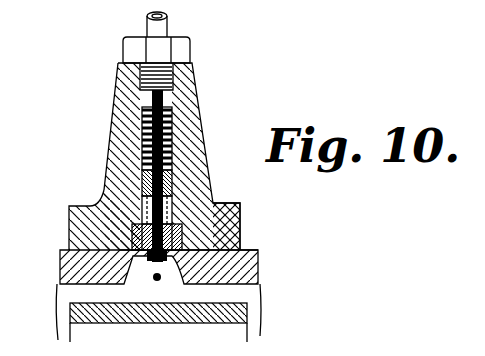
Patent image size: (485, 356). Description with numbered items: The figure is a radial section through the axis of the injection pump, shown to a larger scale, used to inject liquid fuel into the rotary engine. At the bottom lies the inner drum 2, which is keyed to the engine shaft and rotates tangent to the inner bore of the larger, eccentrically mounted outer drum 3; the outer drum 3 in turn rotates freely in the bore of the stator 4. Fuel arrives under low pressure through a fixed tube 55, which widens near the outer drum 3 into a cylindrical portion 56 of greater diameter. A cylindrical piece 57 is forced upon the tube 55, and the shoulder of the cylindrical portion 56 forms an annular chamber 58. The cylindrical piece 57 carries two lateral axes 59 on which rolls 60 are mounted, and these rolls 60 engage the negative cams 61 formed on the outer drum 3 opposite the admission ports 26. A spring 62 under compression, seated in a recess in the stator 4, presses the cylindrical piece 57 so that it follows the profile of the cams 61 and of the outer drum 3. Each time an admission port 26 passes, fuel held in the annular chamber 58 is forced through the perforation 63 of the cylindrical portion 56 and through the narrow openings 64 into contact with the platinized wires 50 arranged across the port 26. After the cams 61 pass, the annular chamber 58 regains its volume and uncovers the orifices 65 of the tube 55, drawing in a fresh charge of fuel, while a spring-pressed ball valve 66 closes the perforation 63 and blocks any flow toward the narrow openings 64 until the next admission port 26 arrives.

The inner drum 2 is at (244, 313).
The outer drum 3 is at (258, 270).
The stator 4 is at (232, 231).
The admission port 26 is at (247, 252).
The platinized wires 50 is at (159, 280).
The fixed tube 55 is at (162, 97).
The cylindrical portion 56 is at (134, 242).
The cylindrical piece 57 is at (166, 178).
The annular chamber 58 is at (134, 228).
The lateral axes 59 is at (238, 214).
The rolls 60 is at (174, 215).
The negative cams 61 is at (124, 278).
The spring 62 is at (163, 132).
The perforation 63 is at (211, 198).
The narrow openings 64 is at (152, 262).
The orifices 65 is at (104, 193).
The spring-pressed ball valve 66 is at (62, 275).